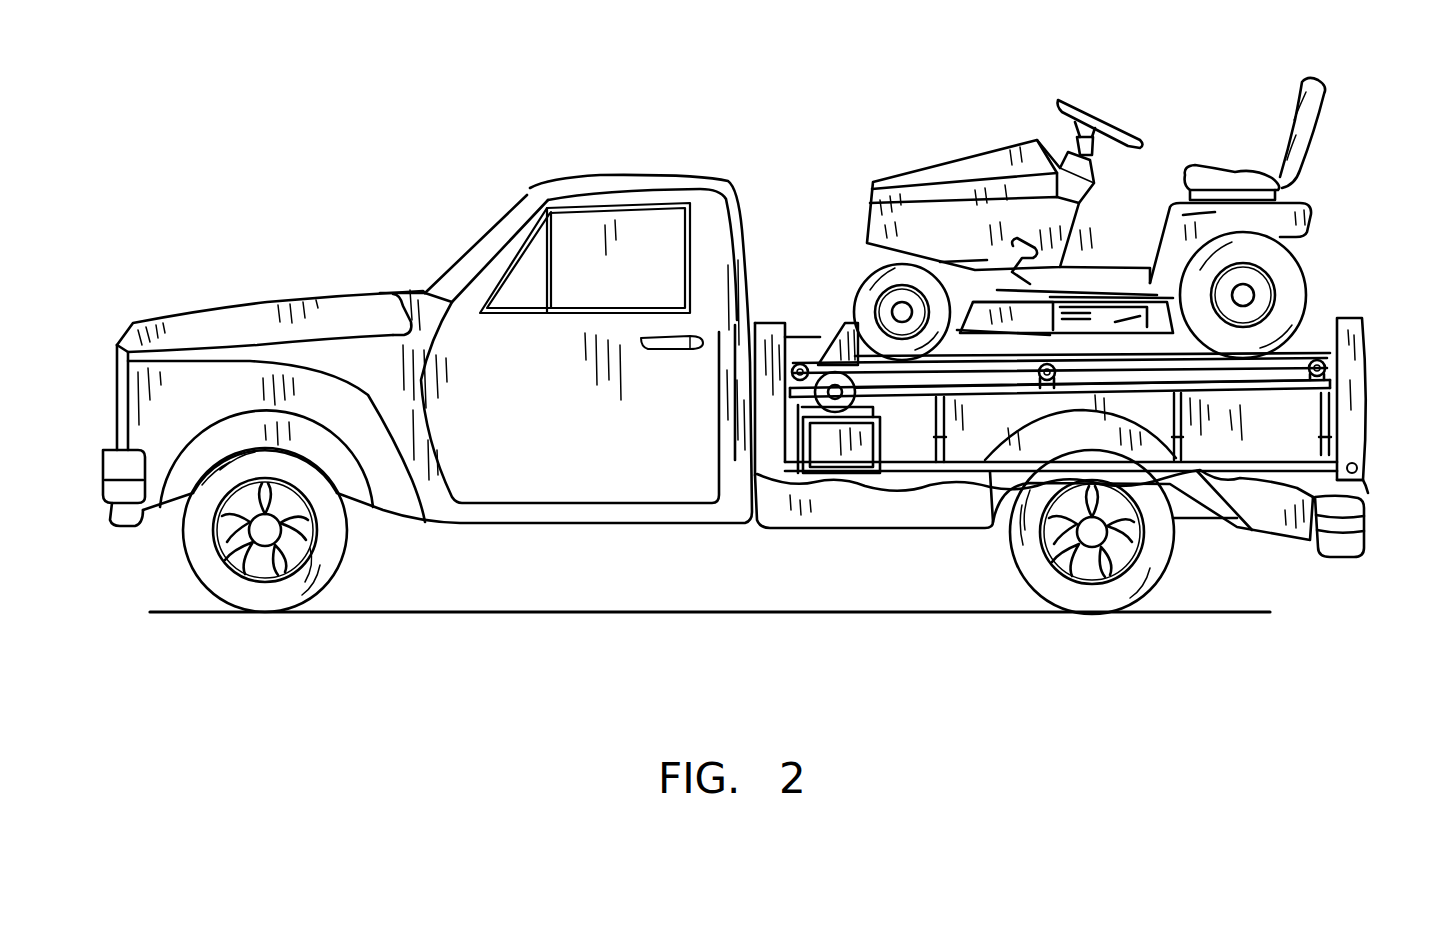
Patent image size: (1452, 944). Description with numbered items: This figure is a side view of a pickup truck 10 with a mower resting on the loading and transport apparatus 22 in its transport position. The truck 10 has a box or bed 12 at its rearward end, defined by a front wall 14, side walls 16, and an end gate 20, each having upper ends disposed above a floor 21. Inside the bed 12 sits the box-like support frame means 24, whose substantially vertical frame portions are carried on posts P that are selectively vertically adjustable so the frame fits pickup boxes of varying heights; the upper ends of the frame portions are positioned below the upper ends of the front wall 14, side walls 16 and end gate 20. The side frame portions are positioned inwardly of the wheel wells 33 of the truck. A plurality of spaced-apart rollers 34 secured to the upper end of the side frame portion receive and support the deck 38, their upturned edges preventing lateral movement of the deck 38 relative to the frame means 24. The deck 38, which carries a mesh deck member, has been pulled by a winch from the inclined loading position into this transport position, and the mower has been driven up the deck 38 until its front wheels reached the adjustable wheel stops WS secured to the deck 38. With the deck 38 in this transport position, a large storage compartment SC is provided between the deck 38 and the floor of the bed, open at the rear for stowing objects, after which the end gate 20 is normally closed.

The pickup truck 10 is at (628, 150).
The box or bed 12 is at (1317, 342).
The front wall 14 is at (793, 340).
The side wall 16 is at (1306, 426).
The end gate 20 is at (1357, 416).
The floor 21 is at (1323, 494).
The apparatus 22 is at (967, 398).
The support frame means 24 is at (1327, 382).
The wheel wells 33 is at (1079, 452).
The rollers 34 is at (1097, 365).
The deck 38 is at (1295, 362).
The wheel stops WS is at (836, 338).
The posts P is at (1175, 412).
The storage compartment SC is at (1228, 452).